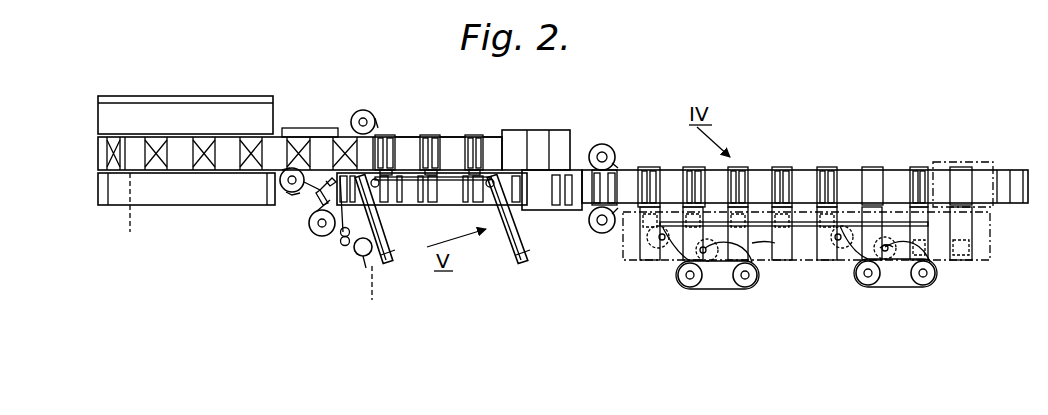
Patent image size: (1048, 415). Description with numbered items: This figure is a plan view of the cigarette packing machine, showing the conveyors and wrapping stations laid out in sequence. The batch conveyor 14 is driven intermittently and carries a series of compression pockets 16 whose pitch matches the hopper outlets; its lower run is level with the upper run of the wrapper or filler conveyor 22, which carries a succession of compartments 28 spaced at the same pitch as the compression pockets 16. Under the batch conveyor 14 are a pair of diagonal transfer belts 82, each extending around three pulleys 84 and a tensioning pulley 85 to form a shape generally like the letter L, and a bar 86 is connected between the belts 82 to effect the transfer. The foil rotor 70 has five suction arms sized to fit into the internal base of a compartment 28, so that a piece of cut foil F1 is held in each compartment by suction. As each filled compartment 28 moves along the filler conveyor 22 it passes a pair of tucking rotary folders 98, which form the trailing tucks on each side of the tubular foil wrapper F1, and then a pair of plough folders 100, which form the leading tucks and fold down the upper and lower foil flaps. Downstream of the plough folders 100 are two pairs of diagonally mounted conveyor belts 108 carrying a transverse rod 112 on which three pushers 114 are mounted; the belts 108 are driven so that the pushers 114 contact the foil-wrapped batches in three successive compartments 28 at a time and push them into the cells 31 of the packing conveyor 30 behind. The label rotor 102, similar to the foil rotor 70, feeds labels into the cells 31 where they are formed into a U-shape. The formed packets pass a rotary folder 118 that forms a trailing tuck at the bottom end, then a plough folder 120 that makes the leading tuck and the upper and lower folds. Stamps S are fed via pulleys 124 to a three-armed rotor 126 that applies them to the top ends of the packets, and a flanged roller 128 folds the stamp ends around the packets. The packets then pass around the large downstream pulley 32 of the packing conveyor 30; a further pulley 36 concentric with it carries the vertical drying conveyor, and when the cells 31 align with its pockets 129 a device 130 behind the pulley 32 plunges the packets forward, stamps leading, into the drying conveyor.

The batch conveyor 14 is at (943, 262).
The compression pockets 16 is at (973, 262).
The wrapper or filler conveyor 22 is at (892, 155).
The compartments 28 is at (870, 167).
The packing conveyor 30 is at (405, 137).
The compartments or cells 31 is at (502, 147).
The large downstream pulley 32 is at (239, 198).
The further pulley 36 is at (163, 202).
The foil rotor 70 is at (972, 160).
The diagonal transfer belts 82 is at (738, 284).
The pulleys 84 is at (670, 286).
The tensioning pulley 85 is at (752, 243).
The bar 86 is at (807, 227).
The tucking rotary folders 98 is at (613, 148).
The plough folders 100 is at (560, 210).
The label rotor 102 is at (537, 128).
The diagonally mounted conveyor belts 108 is at (507, 240).
The transverse rod 112 is at (405, 203).
The pushers 114 is at (447, 170).
The rotary folder 118 is at (363, 110).
The plough folder 120 is at (300, 128).
The pulleys 124 is at (358, 249).
The three-armed rotor 126 is at (317, 232).
The flanged roller 128 is at (282, 182).
The pockets 129 is at (103, 205).
The device 130 is at (203, 93).
The piece of cut foil F1 is at (780, 167).
The stamps S is at (373, 278).